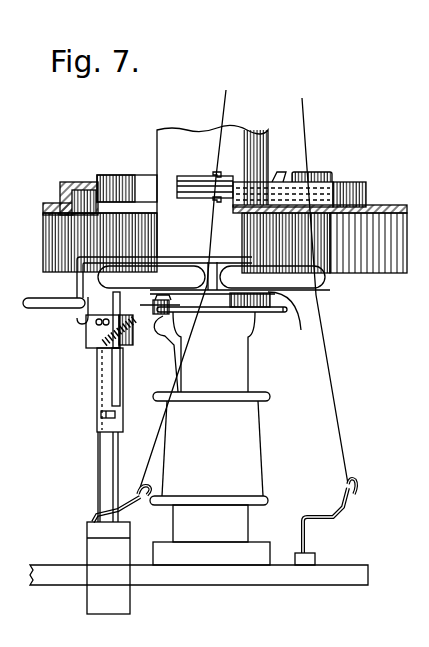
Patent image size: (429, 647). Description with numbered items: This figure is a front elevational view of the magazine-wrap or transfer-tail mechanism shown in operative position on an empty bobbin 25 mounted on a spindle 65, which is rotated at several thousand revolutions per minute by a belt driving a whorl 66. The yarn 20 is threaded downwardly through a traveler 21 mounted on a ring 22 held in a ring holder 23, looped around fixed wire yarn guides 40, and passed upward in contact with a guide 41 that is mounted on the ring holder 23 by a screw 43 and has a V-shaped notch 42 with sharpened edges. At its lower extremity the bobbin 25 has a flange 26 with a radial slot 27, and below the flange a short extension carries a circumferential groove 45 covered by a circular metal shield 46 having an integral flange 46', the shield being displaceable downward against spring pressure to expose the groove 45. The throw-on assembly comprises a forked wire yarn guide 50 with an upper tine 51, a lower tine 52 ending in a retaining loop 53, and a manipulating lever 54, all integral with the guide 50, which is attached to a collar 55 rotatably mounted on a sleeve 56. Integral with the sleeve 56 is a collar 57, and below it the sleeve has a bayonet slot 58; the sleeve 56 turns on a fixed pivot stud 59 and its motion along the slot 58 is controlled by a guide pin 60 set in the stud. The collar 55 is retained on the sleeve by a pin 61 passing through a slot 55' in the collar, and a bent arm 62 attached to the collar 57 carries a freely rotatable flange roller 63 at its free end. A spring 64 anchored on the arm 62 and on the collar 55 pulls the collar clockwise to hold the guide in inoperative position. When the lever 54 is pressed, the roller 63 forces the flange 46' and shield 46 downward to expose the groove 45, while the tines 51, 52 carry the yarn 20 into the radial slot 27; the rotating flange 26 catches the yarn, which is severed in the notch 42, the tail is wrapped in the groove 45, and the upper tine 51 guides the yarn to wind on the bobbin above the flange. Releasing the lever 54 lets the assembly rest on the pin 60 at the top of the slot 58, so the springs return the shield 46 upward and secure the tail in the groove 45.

The yarn 20 is at (226, 100).
The traveler 21 is at (214, 176).
The ring 22 is at (136, 176).
The ring holder 23 is at (70, 182).
The bobbin 25 is at (238, 130).
The flange 26 is at (298, 278).
The radial slot 27 is at (212, 286).
The wire yarn guides 40 is at (128, 498).
The guide 41 is at (318, 174).
The V-shaped notch 42 is at (300, 178).
The screw 43 is at (276, 170).
The circumferential groove 45 is at (294, 317).
The metal shield 46 is at (222, 321).
The flange 46' is at (276, 332).
The forked wire yarn guide 50 is at (72, 295).
The upper tine 51 is at (135, 257).
The lower tine 52 is at (88, 300).
The retaining loop 53 is at (176, 310).
The manipulating lever 54 is at (32, 308).
The collar 55 is at (72, 339).
The slot 55' is at (75, 349).
The sleeve 56 is at (98, 388).
The collar 57 is at (124, 350).
The bayonet slot 58 is at (116, 416).
The pivot stud 59 is at (98, 454).
The guide pin 60 is at (100, 418).
The pin 61 is at (102, 350).
The bent arm 62 is at (118, 308).
The flange roller 63 is at (160, 314).
The spring 64 is at (128, 338).
The spindle 65 is at (242, 373).
The whorl 66 is at (258, 447).